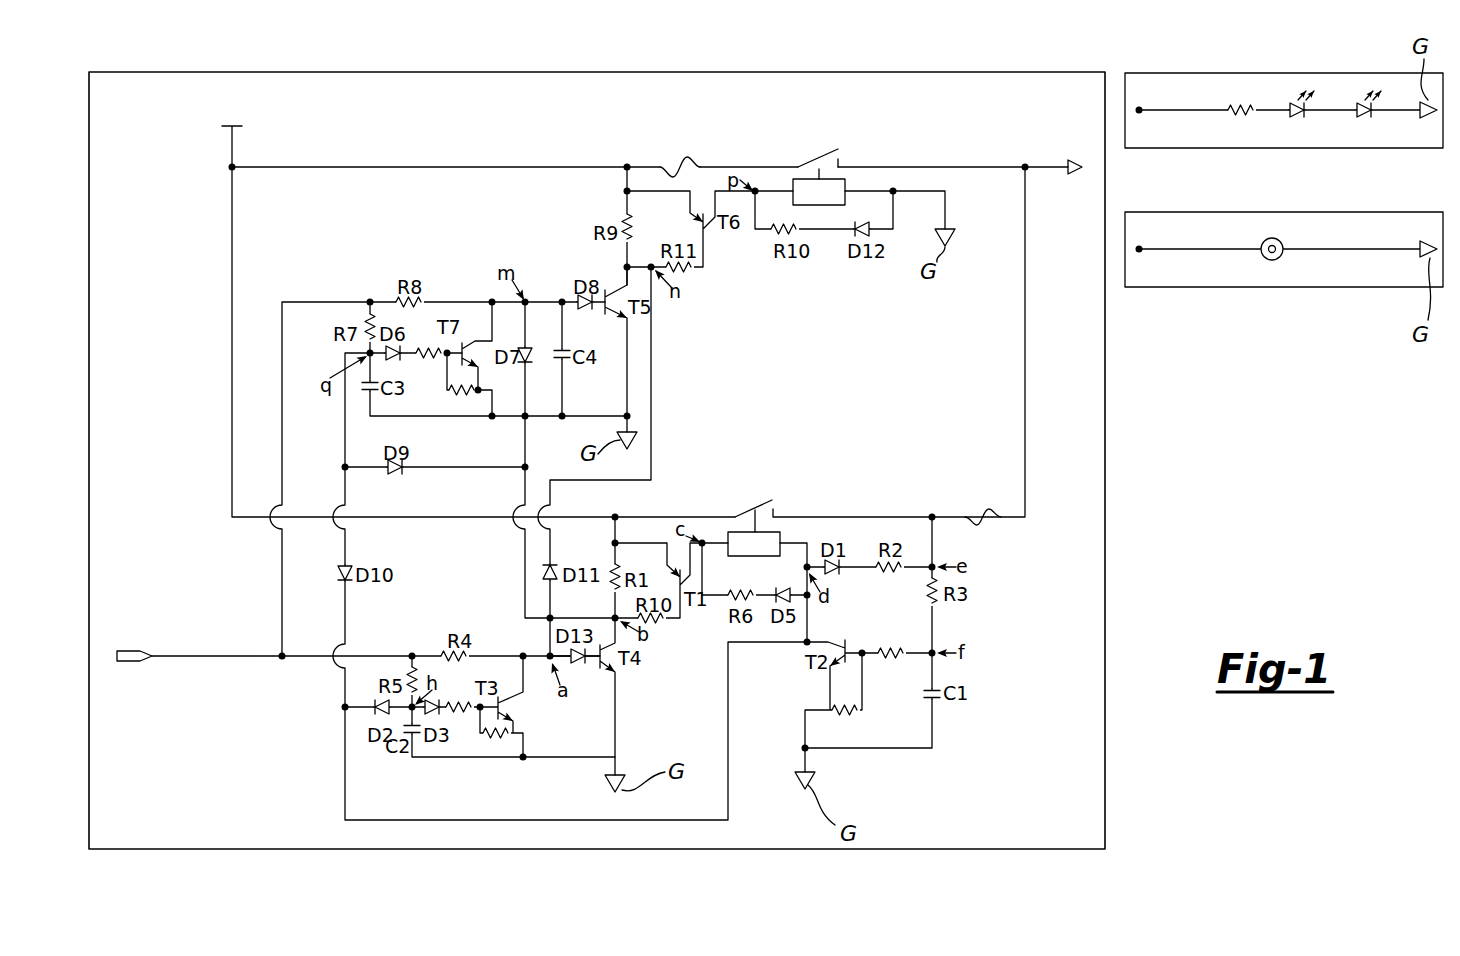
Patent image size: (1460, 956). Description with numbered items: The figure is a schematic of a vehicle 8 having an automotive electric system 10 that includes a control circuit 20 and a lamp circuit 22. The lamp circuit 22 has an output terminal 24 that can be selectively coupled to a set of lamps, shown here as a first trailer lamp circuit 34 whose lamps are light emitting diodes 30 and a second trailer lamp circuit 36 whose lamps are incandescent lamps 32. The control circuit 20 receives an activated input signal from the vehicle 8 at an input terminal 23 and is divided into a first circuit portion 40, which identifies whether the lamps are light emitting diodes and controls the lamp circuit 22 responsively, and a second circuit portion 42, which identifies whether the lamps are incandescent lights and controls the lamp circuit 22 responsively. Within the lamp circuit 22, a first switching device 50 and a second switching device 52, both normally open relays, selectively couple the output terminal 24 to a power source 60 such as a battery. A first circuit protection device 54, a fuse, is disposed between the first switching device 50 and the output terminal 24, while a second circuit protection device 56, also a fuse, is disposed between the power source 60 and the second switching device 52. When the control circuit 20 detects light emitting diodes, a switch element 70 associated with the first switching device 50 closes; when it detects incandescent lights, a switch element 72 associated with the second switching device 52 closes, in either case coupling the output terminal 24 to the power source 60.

The vehicle 8 is at (797, 62).
The automotive electric system 10 is at (750, 815).
The control circuit 20 is at (320, 676).
The lamp circuit 22 is at (215, 207).
The input terminal 23 is at (128, 650).
The output terminal 24 is at (1075, 160).
The light emitting diodes 30 is at (1290, 100).
The incandescent lamps 32 is at (1265, 260).
The first trailer lamp circuit 34 is at (1163, 73).
The second trailer lamp circuit 36 is at (1160, 287).
The first circuit portion 40 is at (328, 777).
The second circuit portion 42 is at (330, 290).
The first switching device 50 is at (783, 533).
The second switching device 52 is at (848, 186).
The first circuit protection device 54 is at (987, 510).
The second circuit protection device 56 is at (680, 158).
The power source 60 is at (237, 97).
The switch element 70 is at (770, 500).
The switch element 72 is at (830, 149).